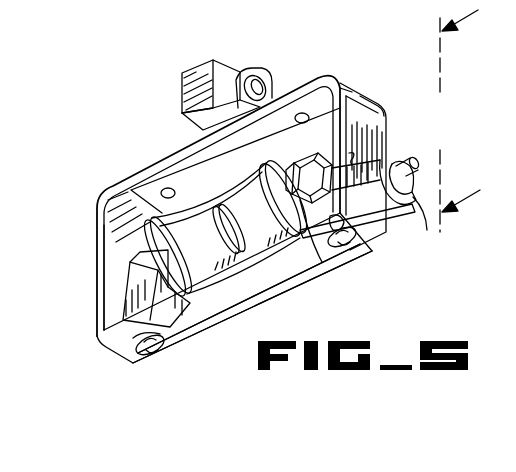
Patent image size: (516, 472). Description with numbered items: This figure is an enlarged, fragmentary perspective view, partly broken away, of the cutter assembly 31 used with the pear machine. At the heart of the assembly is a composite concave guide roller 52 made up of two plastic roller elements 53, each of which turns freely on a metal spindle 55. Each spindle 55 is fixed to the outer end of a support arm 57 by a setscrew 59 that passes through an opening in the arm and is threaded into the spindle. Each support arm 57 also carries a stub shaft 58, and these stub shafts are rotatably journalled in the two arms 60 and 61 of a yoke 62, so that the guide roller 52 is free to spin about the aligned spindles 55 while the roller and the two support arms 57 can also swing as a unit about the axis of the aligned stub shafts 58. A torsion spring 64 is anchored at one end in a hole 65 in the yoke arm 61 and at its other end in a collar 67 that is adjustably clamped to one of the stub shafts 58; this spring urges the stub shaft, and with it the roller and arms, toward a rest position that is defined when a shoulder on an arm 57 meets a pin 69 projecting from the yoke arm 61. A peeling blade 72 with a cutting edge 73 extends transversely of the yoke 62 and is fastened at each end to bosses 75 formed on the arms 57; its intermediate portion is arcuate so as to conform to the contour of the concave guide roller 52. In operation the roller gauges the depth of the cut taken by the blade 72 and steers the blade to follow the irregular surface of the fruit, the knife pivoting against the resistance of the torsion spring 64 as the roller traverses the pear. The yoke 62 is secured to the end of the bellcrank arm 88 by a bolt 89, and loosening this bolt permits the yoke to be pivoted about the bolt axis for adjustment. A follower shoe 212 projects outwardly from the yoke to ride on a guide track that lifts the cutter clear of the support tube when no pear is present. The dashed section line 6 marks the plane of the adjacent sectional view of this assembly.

The section line 6- 6 is at (460, 121).
The cutter assembly 31 is at (355, 95).
The composite concave guide roller 52 is at (253, 200).
The plastic roller element 53 is at (226, 228).
The metal spindle 55 is at (291, 190).
The support arm 57 is at (133, 270).
The stub shaft 58 is at (418, 163).
The setscrew 59 is at (308, 202).
The yoke arm 60 is at (113, 247).
The yoke arm 61 is at (374, 108).
The yoke 62 is at (143, 165).
The torsion spring 64 is at (372, 212).
The hole 65 is at (346, 215).
The collar 67 is at (427, 230).
The pin 69 is at (352, 166).
The peeling blade 72 is at (215, 289).
The cutting edge 73 is at (272, 268).
The boss 75 is at (135, 340).
The bellcrank arm 88 is at (195, 88).
The bolt 89 is at (262, 90).
The follower shoe 212 is at (382, 176).